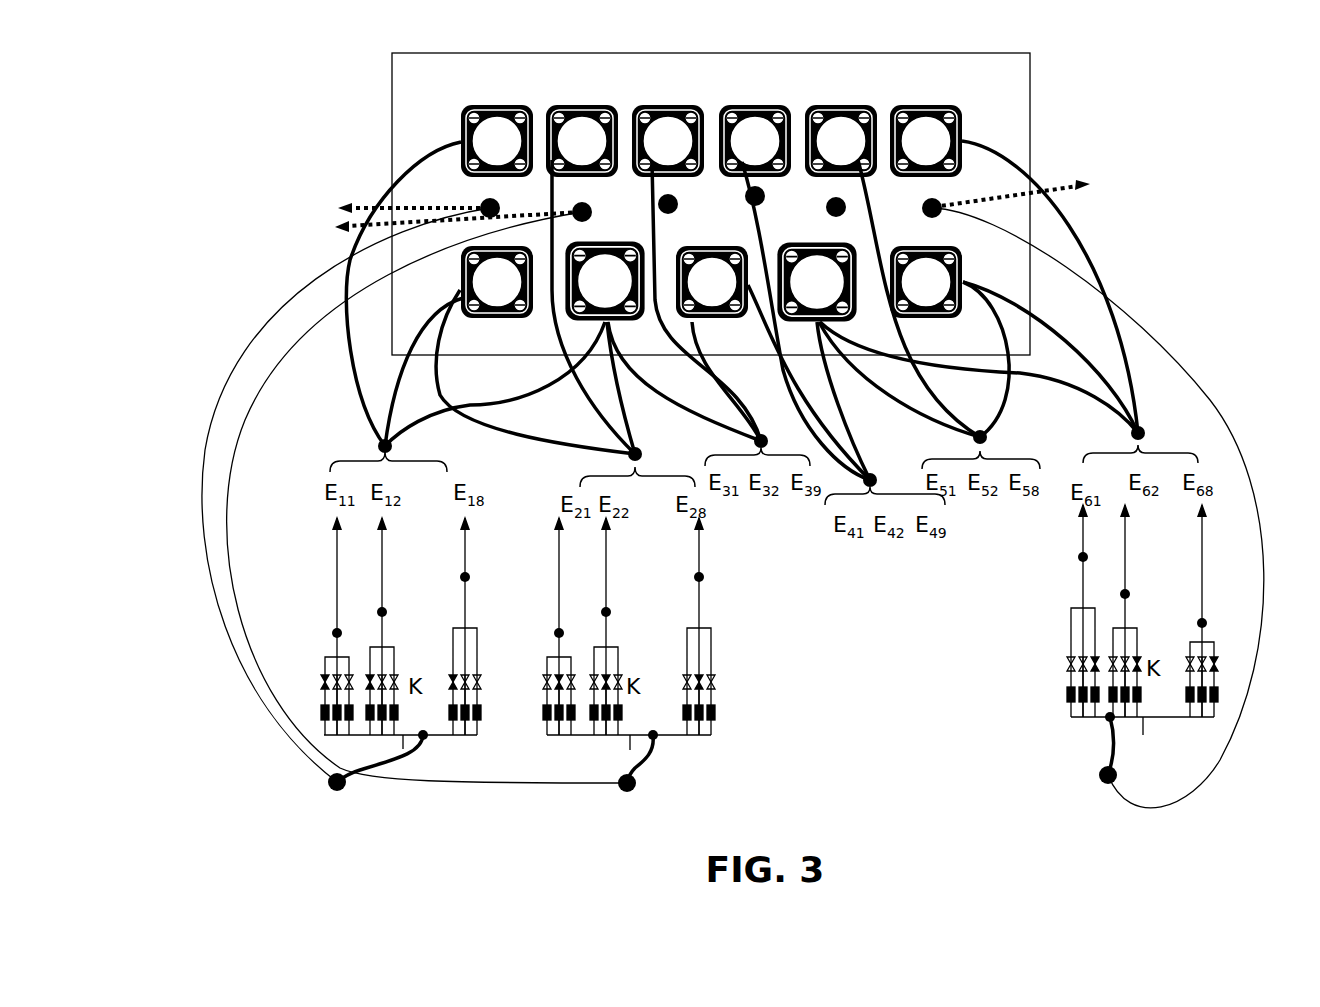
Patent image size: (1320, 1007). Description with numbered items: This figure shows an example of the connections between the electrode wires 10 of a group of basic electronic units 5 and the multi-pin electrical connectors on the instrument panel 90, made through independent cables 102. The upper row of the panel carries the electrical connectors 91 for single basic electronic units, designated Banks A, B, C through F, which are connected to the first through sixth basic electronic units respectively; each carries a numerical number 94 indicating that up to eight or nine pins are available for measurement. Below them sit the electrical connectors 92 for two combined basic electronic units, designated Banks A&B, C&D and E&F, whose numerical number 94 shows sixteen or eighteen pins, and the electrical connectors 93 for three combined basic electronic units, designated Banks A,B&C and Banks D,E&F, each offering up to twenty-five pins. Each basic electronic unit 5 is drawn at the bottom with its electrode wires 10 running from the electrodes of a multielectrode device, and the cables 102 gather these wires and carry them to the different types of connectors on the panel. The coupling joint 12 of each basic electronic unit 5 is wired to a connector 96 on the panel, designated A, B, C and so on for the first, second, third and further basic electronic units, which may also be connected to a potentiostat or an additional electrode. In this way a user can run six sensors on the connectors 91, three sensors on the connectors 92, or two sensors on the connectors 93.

The basic electronic unit 5 is at (731, 661).
The electrode wires 10 is at (754, 619).
The coupling joint 12 is at (676, 781).
The instrument panel 90 is at (1070, 87).
The electrical connector for basic electronic unit 91 is at (457, 128).
The electrical connector for two or more basic electronic units 92 is at (458, 265).
The electrical connector for more basic electronic units 93 is at (563, 323).
The numerical number 94 is at (503, 128).
The connector connected to the coupling joint 96 is at (450, 195).
The cable 102 is at (716, 375).